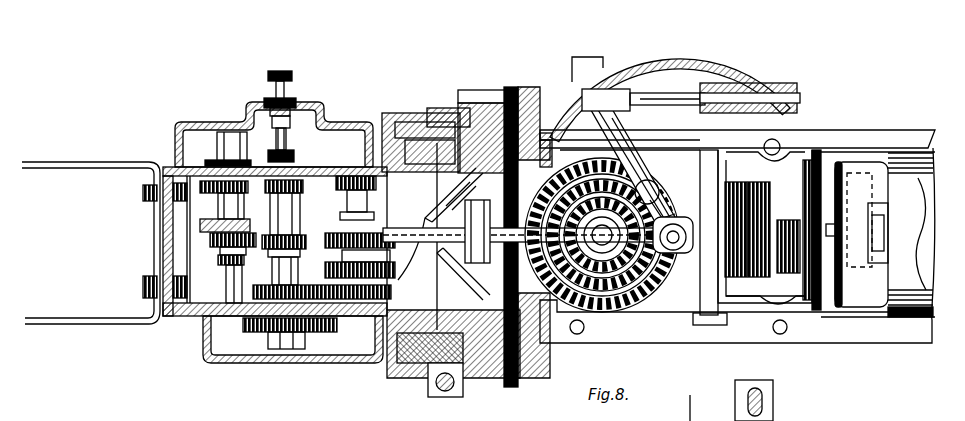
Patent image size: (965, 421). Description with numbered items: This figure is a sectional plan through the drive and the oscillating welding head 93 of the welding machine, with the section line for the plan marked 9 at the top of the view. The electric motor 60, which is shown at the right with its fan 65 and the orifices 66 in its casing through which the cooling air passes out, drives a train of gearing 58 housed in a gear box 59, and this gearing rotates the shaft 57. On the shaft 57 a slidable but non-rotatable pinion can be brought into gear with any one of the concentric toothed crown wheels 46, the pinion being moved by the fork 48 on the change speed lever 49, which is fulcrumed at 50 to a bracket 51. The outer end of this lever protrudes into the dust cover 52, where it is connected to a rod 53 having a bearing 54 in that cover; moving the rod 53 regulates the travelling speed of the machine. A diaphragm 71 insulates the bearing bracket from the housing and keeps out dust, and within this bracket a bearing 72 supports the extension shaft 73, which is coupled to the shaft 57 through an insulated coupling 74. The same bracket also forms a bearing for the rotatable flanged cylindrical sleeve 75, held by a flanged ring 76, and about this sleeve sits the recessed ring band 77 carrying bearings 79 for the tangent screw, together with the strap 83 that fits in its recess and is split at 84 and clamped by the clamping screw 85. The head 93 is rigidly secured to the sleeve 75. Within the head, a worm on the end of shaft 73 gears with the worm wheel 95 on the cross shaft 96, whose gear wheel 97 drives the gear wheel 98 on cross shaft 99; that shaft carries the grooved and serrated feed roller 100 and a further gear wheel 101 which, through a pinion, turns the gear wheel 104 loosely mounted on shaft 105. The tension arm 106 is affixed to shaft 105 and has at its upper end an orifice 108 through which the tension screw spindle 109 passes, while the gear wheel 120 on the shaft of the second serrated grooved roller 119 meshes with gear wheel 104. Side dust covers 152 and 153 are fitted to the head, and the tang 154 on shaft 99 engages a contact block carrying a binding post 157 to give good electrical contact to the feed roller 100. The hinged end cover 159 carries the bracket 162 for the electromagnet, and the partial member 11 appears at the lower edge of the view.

The section line 9 is at (277, 12).
The lever 11 is at (677, 408).
The concentric toothed crown wheels 46 is at (662, 294).
The fork 48 is at (677, 248).
The change speed lever 49 is at (665, 200).
The fulcrum 50 is at (659, 188).
The bracket 51 is at (634, 167).
The dust cover 52 is at (665, 112).
The rod 53 is at (712, 108).
The bearing 54 is at (741, 88).
The shaft 57 is at (513, 237).
The train of gearing 58 is at (768, 230).
The gear box 59 is at (737, 236).
The electric motor 60 is at (882, 220).
The fan 65 is at (868, 188).
The orifices 66 is at (872, 268).
The diaphragm 71 is at (505, 286).
The bearing 72 is at (430, 222).
The extension shaft 73 is at (533, 237).
The insulated coupling 74 is at (477, 231).
The rotatable flanged cylindrical sleeve 75 is at (473, 103).
The flanged ring 76 is at (469, 93).
The recessed ring band 77 is at (405, 128).
The bearings 79 is at (470, 167).
The strap 83 is at (428, 125).
The split 84 is at (430, 377).
The clamping screw 85 is at (456, 388).
The oscillating welding head 93 is at (412, 236).
The worm wheel 95 is at (326, 240).
The cross shaft 96 is at (358, 204).
The gear wheel 97 is at (391, 294).
The gear wheel 98 is at (318, 302).
The cross shaft 99 is at (300, 266).
The grooved and serrated feed roller 100 is at (298, 214).
The gear wheel 101 is at (300, 193).
The gear wheel 104 is at (205, 196).
The shaft 105 is at (236, 286).
The tension arm 106 is at (215, 222).
The orifice 108 is at (765, 390).
The tension screw spindle 109 is at (748, 405).
The second serrated grooved roller 119 is at (215, 243).
The gear wheel 120 is at (258, 170).
The side dust cover 152 is at (311, 360).
The side dust cover 153 is at (364, 122).
The tang 154 is at (292, 138).
The binding post 157 is at (291, 88).
The end cover 159 is at (153, 180).
The bracket 162 is at (91, 243).